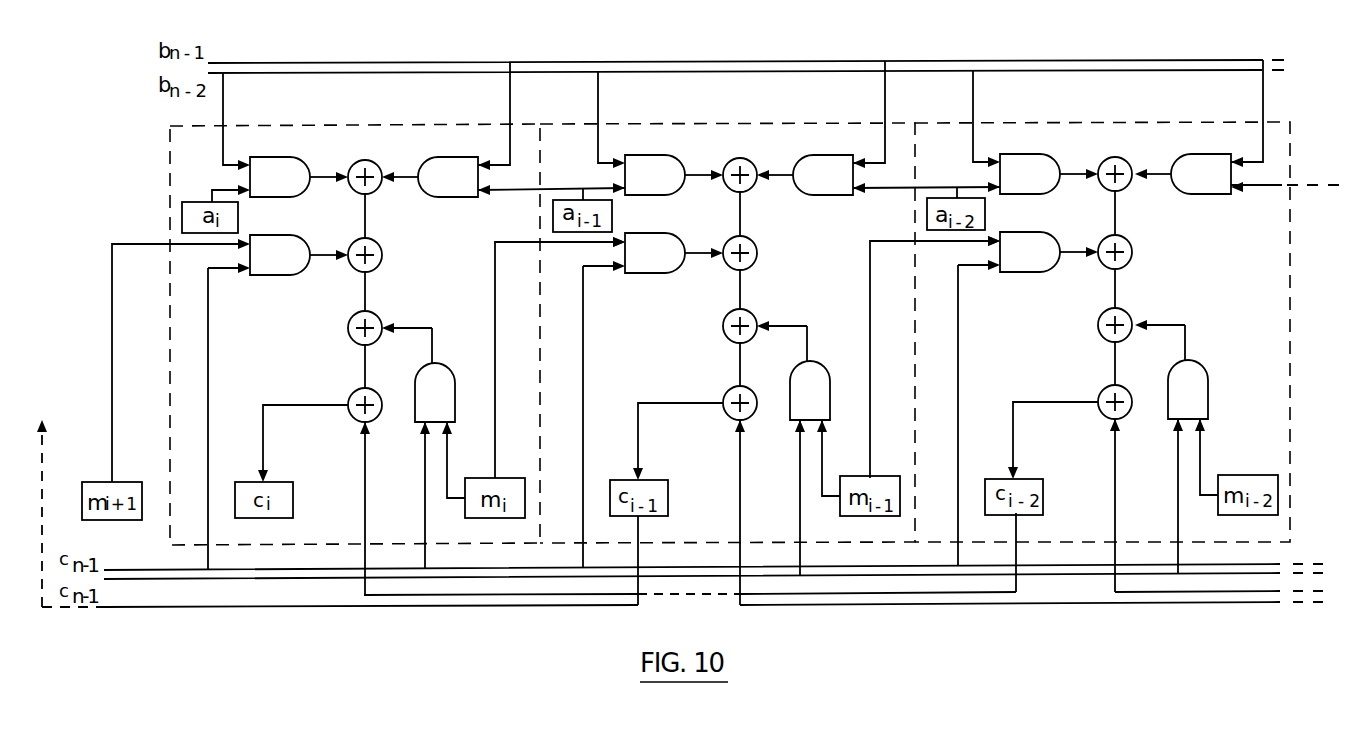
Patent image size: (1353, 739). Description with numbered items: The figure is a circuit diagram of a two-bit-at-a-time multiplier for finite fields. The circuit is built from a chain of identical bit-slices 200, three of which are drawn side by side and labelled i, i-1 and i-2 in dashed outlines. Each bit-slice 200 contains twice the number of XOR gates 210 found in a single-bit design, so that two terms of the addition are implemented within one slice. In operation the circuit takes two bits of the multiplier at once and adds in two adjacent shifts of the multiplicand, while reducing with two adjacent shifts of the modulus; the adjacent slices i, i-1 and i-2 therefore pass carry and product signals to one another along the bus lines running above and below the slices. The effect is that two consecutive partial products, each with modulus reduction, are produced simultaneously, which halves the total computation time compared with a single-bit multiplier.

The bit-slices 200 is at (273, 126).
The XOR gates 210 is at (383, 163).
The cell i is at (403, 329).
The cell i-1 is at (739, 333).
The cell i-2 is at (1096, 326).